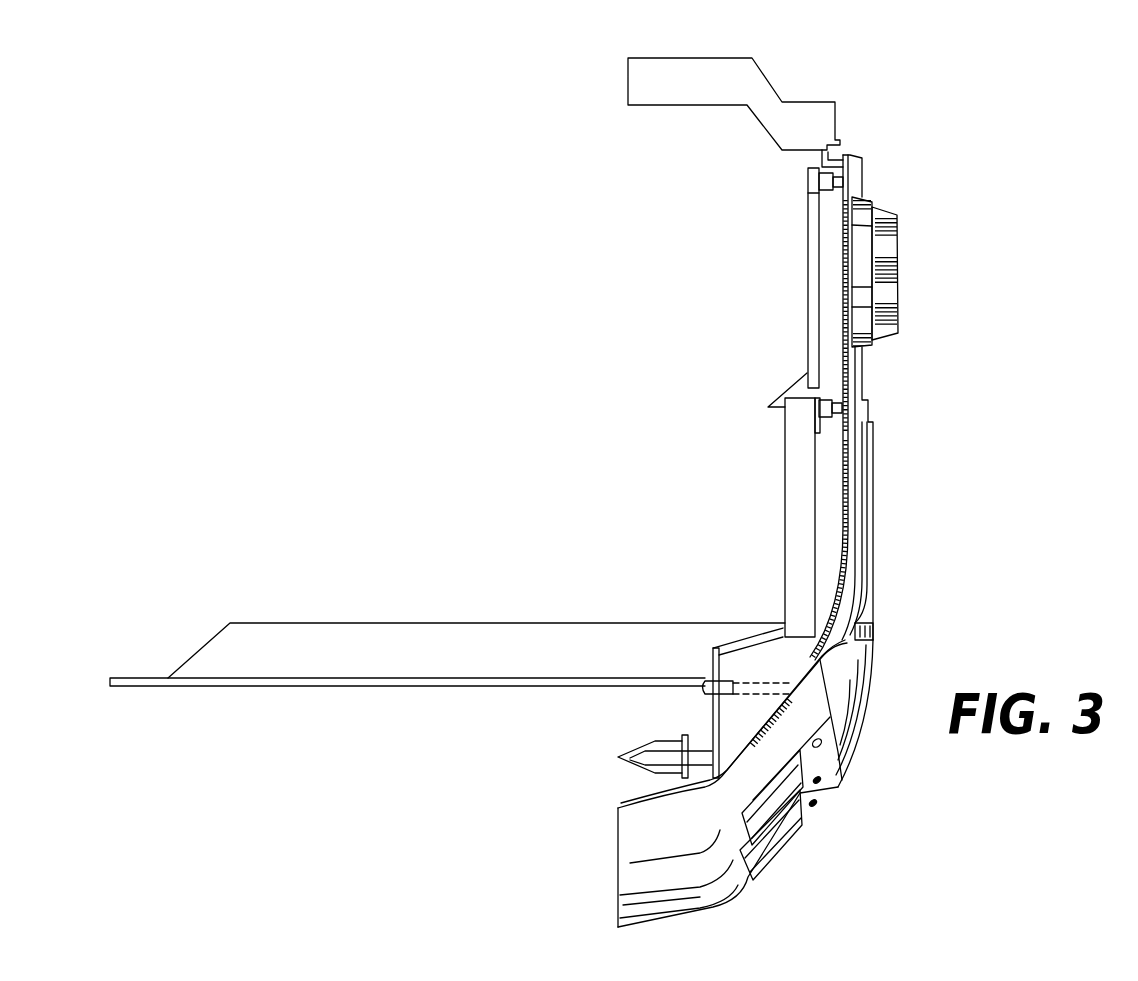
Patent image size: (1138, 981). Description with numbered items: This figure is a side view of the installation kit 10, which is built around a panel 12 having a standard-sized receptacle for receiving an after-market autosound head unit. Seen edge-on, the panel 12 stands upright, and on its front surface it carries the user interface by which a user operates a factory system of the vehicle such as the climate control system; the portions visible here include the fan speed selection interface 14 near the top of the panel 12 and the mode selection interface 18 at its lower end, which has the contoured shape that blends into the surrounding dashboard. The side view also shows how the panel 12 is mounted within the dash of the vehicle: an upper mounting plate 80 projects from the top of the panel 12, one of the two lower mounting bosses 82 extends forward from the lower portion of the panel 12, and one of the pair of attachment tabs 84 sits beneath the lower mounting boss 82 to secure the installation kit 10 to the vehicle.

The installation kit 10 is at (868, 110).
The panel 12 is at (855, 182).
The fan speed selection interface 14 is at (918, 300).
The mode selection interface 18 is at (797, 856).
The upper mounting plate 80 is at (683, 65).
The lower mounting boss 82 is at (427, 662).
The attachment tab 84 is at (618, 757).